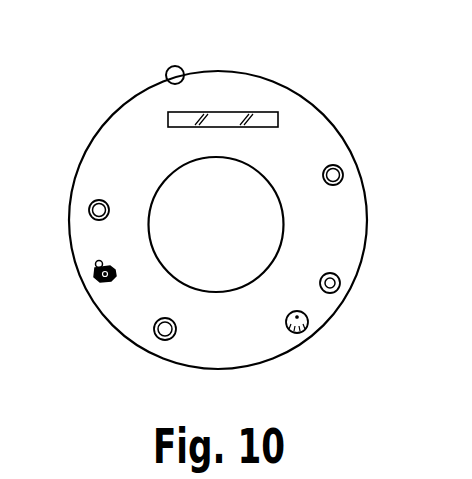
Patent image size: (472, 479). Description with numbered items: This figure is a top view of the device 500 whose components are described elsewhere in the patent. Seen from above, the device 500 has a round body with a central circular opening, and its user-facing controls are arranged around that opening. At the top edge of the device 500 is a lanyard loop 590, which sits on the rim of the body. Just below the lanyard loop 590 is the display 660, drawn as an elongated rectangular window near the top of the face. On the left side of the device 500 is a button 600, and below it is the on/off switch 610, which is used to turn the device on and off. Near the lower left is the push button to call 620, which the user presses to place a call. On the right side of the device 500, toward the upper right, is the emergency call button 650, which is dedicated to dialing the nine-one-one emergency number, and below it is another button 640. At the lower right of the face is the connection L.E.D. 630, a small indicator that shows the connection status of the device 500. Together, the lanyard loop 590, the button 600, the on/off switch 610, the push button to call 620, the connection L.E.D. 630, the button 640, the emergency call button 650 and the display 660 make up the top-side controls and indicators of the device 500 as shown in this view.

The device 500 is at (331, 47).
The lanyard loop 590 is at (166, 73).
The button 600 is at (89, 209).
The on/off switch 610 is at (93, 273).
The push button to call 620 is at (154, 331).
The connection L.E.D. 630 is at (298, 333).
The button 640 is at (340, 284).
The 911 button 650 is at (343, 176).
The display 660 is at (278, 120).